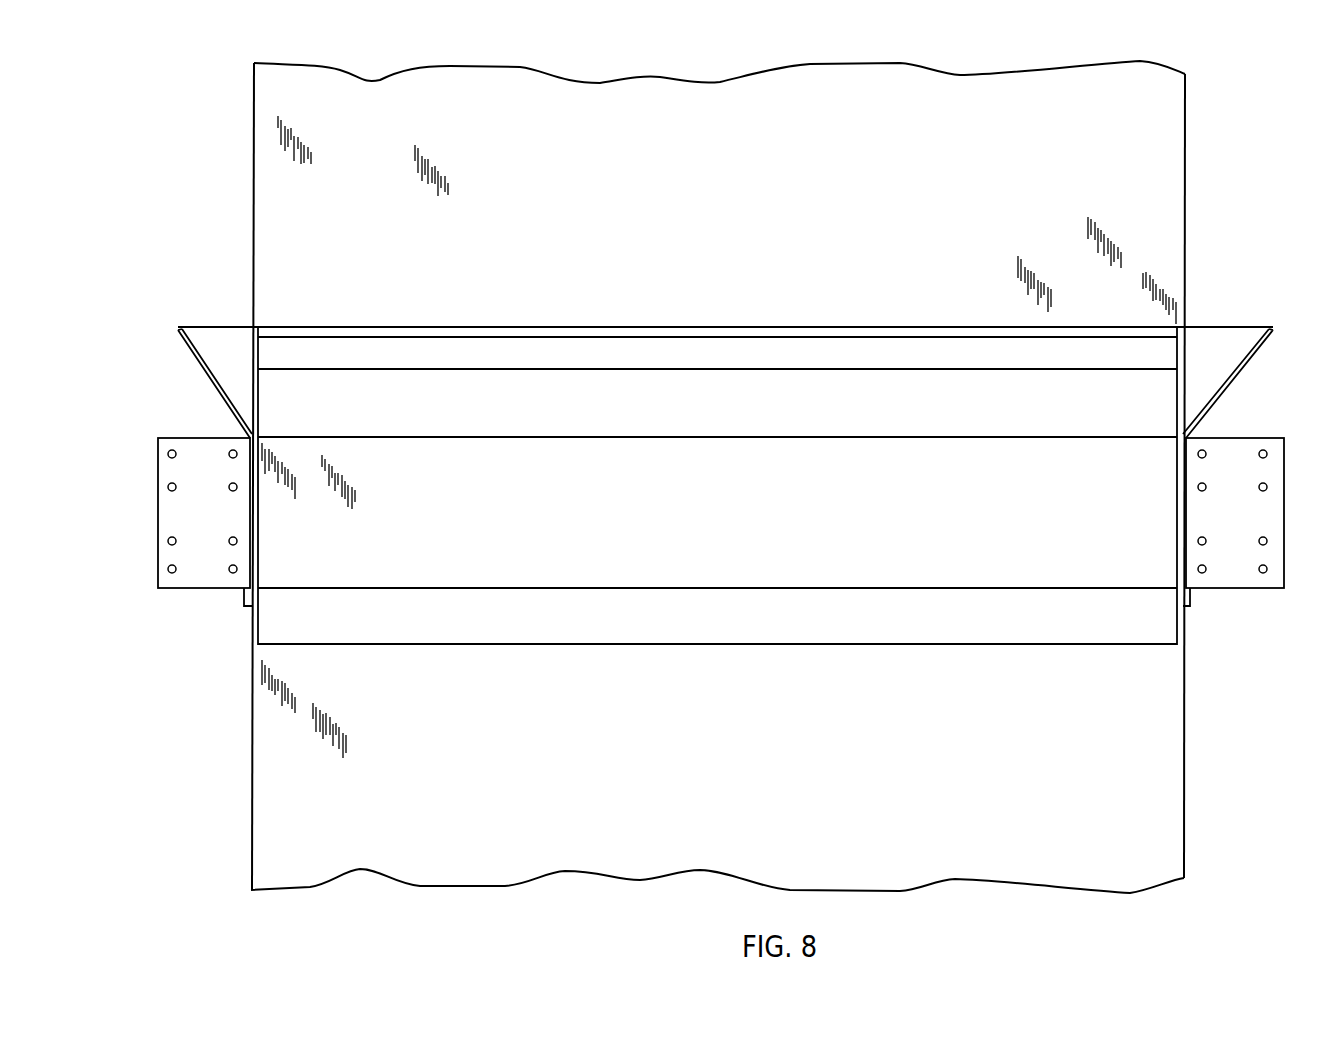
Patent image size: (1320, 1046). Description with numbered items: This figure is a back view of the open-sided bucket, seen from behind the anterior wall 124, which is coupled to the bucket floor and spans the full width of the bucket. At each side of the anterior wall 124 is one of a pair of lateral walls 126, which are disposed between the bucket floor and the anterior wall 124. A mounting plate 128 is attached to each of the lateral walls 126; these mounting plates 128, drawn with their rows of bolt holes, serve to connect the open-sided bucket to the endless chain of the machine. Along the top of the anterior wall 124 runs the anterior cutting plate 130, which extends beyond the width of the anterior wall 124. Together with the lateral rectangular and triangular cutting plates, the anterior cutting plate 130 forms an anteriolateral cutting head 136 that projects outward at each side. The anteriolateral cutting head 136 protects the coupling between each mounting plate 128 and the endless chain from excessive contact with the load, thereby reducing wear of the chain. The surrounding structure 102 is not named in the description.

The wall 102 is at (1185, 168).
The anterior wall 124 is at (788, 541).
The lateral walls 126 is at (258, 535).
The mounting plate 128 is at (158, 526).
The anterior cutting plate 130 is at (715, 327).
The anteriolateral cutting head 136 is at (205, 322).